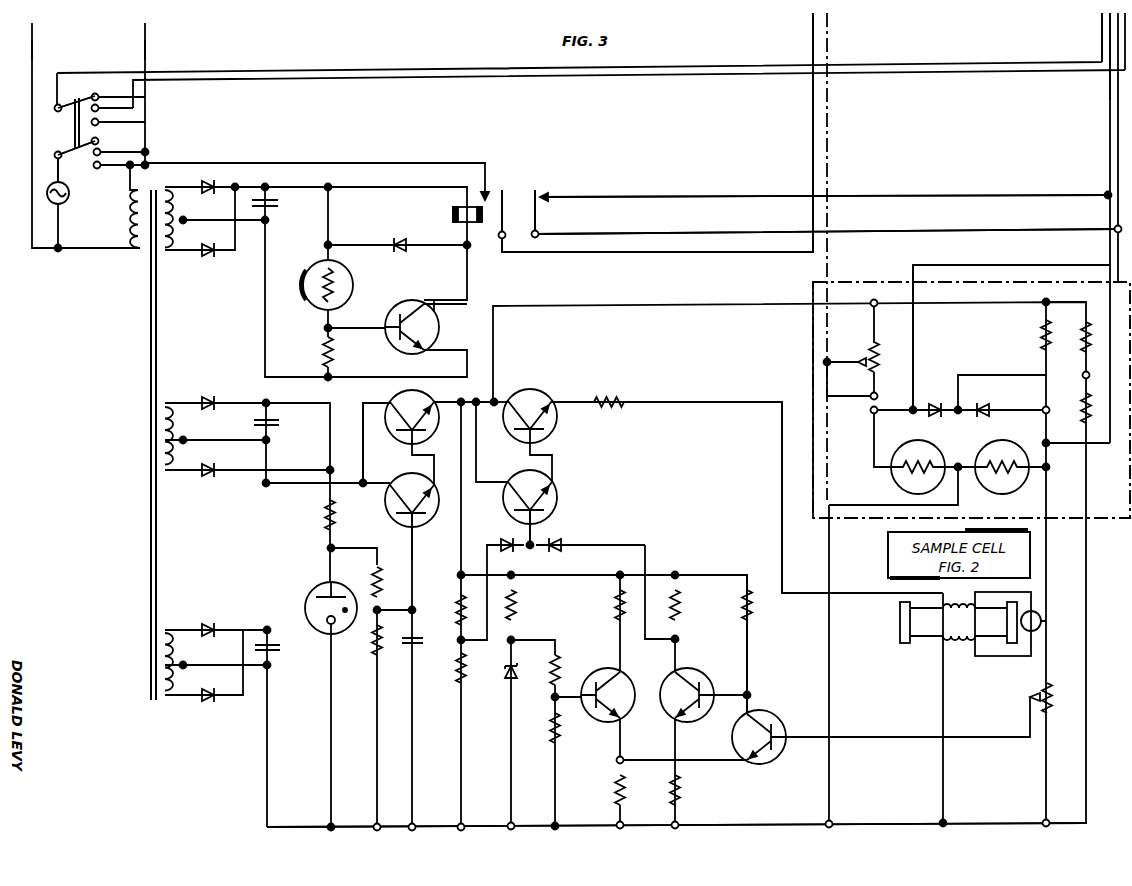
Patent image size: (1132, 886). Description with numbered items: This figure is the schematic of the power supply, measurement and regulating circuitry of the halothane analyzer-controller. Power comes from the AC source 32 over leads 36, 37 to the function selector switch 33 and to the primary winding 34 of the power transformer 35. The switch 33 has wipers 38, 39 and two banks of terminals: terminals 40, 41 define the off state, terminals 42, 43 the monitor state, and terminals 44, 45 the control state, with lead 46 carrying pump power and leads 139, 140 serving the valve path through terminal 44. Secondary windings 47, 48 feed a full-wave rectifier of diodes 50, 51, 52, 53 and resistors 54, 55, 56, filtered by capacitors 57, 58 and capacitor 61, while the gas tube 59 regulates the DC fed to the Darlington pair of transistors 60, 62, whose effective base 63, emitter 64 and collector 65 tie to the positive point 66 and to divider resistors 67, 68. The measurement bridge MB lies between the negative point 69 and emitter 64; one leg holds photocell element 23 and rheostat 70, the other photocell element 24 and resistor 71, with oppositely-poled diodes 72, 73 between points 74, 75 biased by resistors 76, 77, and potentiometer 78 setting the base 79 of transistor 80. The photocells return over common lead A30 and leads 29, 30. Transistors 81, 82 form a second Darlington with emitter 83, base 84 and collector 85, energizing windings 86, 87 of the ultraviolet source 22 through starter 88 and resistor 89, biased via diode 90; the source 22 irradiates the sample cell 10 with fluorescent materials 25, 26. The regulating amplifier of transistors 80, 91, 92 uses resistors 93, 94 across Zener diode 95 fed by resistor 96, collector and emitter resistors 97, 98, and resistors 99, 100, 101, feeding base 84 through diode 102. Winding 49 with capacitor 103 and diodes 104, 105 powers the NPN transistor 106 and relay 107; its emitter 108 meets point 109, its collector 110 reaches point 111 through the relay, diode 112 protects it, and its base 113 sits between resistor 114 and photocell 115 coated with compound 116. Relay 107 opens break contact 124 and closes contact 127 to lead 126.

The cell 10 is at (885, 557).
The ultraviolet source 22 is at (898, 624).
The photocell element 23 is at (895, 483).
The photocell element 24 is at (1012, 492).
The fluorescent material 25 is at (888, 580).
The fluorescent material 26 is at (1030, 530).
The lead 29 is at (915, 325).
The lead 30 is at (1102, 450).
The AC source 32 is at (47, 203).
The function selector switch 33 is at (122, 90).
The primary winding 34 is at (124, 230).
The power transformer 35 is at (166, 185).
The lead 36 is at (80, 250).
The lead 37 is at (56, 170).
The wiper 38 is at (56, 145).
The wiper 39 is at (66, 112).
The terminal 40 is at (148, 97).
The terminal 41 is at (100, 141).
The terminal 42 is at (148, 112).
The terminal 43 is at (95, 156).
The terminal 44 is at (148, 126).
The terminal 45 is at (100, 170).
The lead 46 is at (420, 144).
The secondary winding 47 is at (172, 702).
The secondary winding 48 is at (170, 478).
The secondary winding 49 is at (172, 262).
The diode 50 is at (208, 705).
The diode 51 is at (208, 621).
The diode 52 is at (208, 480).
The diode 53 is at (208, 394).
The resistor 54 is at (383, 650).
The resistor 55 is at (381, 578).
The resistor 56 is at (336, 513).
The capacitor 57 is at (283, 645).
The capacitor 58 is at (282, 422).
The gas tube 59 is at (316, 588).
The transistor 60 is at (433, 516).
The capacitor 61 is at (426, 640).
The transistor 62 is at (433, 433).
The base electrode 63 is at (414, 518).
The emitter electrode 64 is at (452, 400).
The collector electrode 65 is at (365, 458).
The point 66 is at (262, 483).
The resistor 67 is at (455, 678).
The resistor 68 is at (455, 600).
The point 69 is at (262, 827).
The rheostat 70 is at (866, 350).
The resistor 71 is at (1040, 330).
The diode 72 is at (934, 397).
The diode 73 is at (982, 398).
The point 74 is at (868, 415).
The point 75 is at (1040, 400).
The resistor 76 is at (1080, 405).
The resistor 77 is at (1080, 350).
The potentiometer 78 is at (1053, 700).
The base electrode 79 is at (781, 728).
The transistor 80 is at (766, 712).
The transistor 81 is at (533, 389).
The transistor 82 is at (556, 496).
The emitter electrode 83 is at (556, 420).
The base electrode 84 is at (553, 515).
The collector electrode 85 is at (508, 410).
The energizing winding 86 is at (958, 643).
The energizing winding 87 is at (958, 602).
The starter device 88 is at (1048, 621).
The resistor 89 is at (612, 392).
The diode 90 is at (503, 533).
The transistor 91 is at (600, 720).
The transistor 92 is at (695, 670).
The resistor 93 is at (549, 735).
The resistor 94 is at (561, 660).
The Zener diode 95 is at (505, 672).
The resistor 96 is at (517, 600).
The collector resistor 97 is at (614, 612).
The emitter resistor 98 is at (614, 793).
The resistor 99 is at (753, 608).
The resistor 100 is at (681, 790).
The resistor 101 is at (681, 600).
The diode 102 is at (558, 553).
The capacitor 103 is at (282, 208).
The diode 104 is at (210, 262).
The diode 105 is at (208, 178).
The NPN transistor 106 is at (408, 301).
The relay 107 is at (450, 215).
The emitter 108 is at (430, 337).
The point 109 is at (332, 375).
The collector 110 is at (432, 314).
The point 111 is at (332, 185).
The diode 112 is at (396, 234).
The base 113 is at (392, 318).
The resistor 114 is at (322, 350).
The photocell 115 is at (353, 285).
The conversion compound 116 is at (300, 275).
The break contact 124 is at (538, 190).
The lead 126 is at (575, 252).
The contact 127 is at (498, 195).
The lead 139 is at (1100, 28).
The lead 140 is at (1108, 45).
The common lead A30 is at (826, 554).
The measurement bridge MB is at (892, 280).